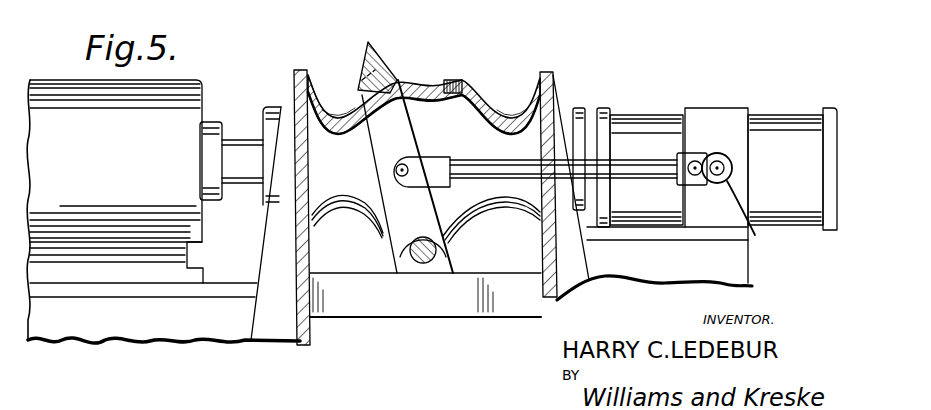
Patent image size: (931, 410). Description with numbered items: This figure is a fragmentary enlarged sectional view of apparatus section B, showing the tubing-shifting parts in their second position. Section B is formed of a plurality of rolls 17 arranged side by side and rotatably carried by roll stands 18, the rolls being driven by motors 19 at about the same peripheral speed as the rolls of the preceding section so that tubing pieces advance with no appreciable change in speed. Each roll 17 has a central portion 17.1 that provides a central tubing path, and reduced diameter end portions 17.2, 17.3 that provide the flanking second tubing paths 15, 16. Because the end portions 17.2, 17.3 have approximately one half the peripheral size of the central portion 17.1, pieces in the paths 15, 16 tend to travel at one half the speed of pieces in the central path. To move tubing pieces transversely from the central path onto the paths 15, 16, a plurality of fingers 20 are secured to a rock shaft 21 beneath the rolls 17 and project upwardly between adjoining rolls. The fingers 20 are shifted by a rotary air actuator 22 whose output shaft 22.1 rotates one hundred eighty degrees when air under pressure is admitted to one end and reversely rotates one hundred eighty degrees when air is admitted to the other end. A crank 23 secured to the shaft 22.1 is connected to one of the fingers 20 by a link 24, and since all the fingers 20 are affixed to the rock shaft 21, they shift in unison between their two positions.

The second tubing path 15 is at (323, 95).
The second tubing path 16 is at (556, 66).
The roll 17 is at (452, 78).
The central portion 17.1 is at (427, 87).
The reduced diameter end portion 17.2 is at (330, 116).
The reduced diameter end portion 17.3 is at (566, 34).
The roll stand 18 is at (291, 316).
The motor 19 is at (108, 177).
The finger 20 is at (378, 44).
The rock shaft 21 is at (427, 262).
The rotary air actuator 22 is at (787, 130).
The output shaft 22.1 is at (718, 160).
The crank 23 is at (755, 235).
The link 24 is at (637, 163).